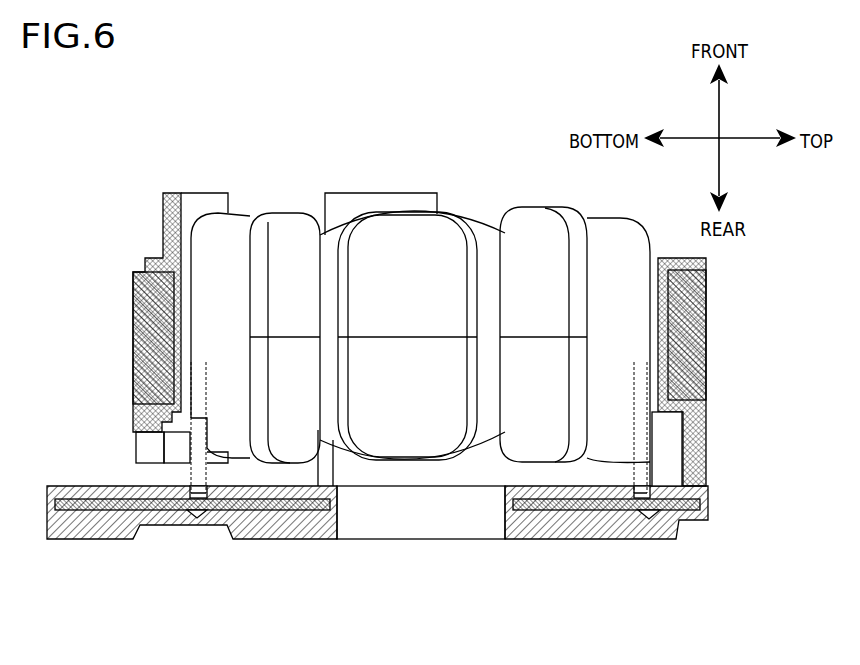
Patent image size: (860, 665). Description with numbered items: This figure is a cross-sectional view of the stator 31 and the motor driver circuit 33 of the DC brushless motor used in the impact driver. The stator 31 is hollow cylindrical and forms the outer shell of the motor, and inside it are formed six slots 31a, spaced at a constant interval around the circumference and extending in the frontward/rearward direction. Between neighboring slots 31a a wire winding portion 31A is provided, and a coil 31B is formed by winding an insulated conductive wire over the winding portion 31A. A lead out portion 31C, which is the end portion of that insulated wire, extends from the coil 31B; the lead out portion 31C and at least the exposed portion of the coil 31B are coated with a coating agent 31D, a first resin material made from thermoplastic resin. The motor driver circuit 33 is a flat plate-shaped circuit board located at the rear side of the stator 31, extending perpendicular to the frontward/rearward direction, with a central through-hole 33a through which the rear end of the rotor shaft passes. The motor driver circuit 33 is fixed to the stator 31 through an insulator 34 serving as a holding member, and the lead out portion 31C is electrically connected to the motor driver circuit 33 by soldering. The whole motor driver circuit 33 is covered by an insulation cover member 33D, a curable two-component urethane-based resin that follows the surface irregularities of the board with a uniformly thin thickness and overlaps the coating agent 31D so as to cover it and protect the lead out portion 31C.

The stator 31 is at (706, 282).
The wire winding portion 31A is at (412, 245).
The coil 31B is at (255, 287).
The coating agent 31D is at (235, 233).
The slot 31a is at (337, 245).
The lead out portion 31C is at (203, 443).
The motor driver circuit 33 is at (607, 510).
The insulation cover member 33D is at (275, 530).
The through-hole 33a is at (448, 512).
The insulator 34 is at (695, 437).